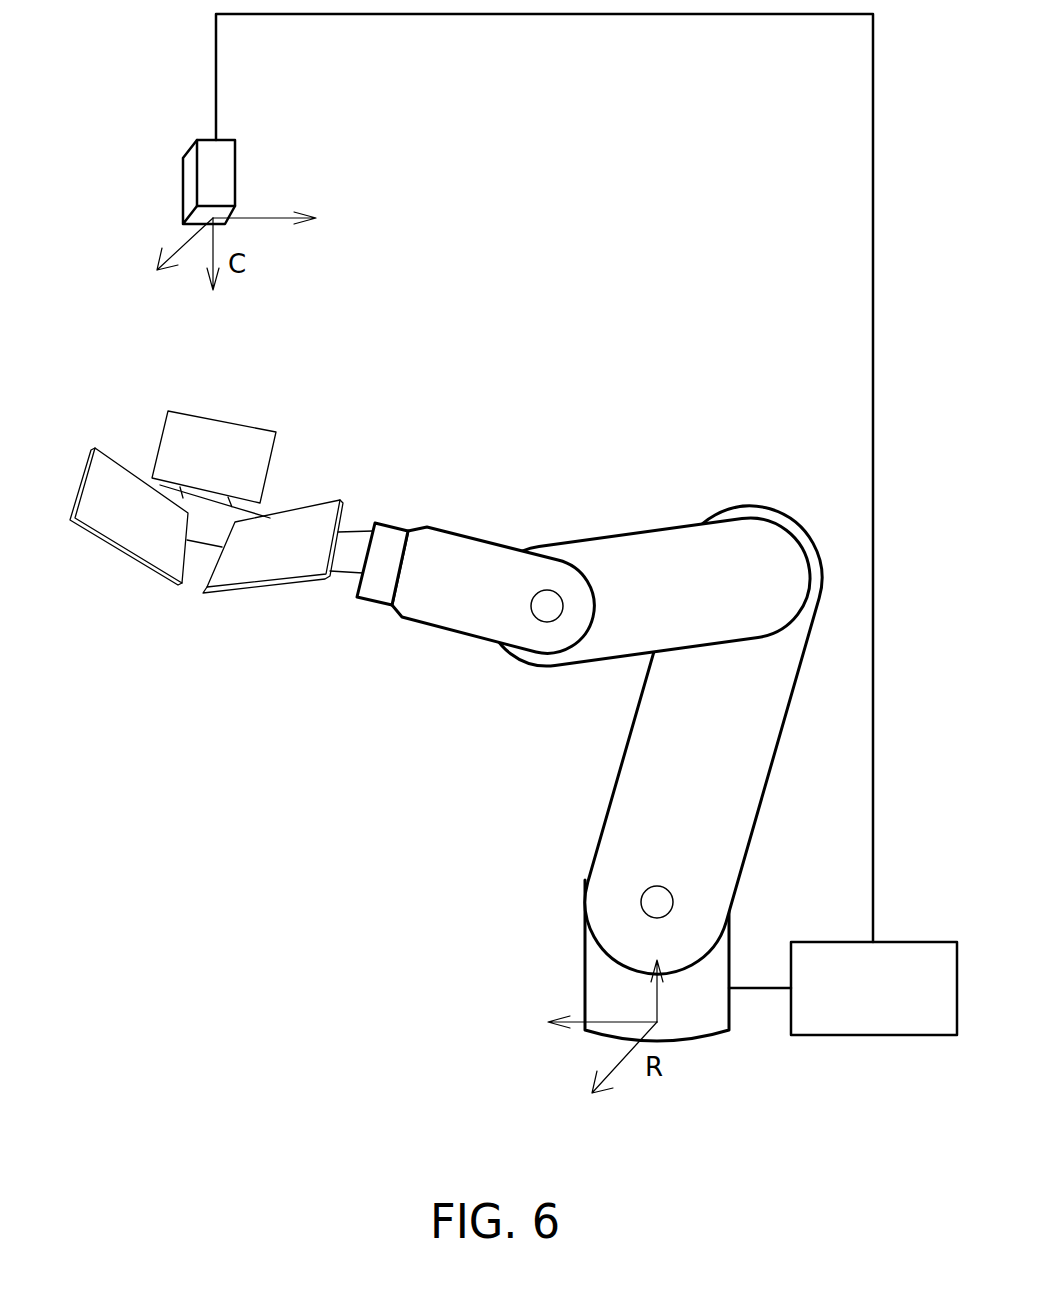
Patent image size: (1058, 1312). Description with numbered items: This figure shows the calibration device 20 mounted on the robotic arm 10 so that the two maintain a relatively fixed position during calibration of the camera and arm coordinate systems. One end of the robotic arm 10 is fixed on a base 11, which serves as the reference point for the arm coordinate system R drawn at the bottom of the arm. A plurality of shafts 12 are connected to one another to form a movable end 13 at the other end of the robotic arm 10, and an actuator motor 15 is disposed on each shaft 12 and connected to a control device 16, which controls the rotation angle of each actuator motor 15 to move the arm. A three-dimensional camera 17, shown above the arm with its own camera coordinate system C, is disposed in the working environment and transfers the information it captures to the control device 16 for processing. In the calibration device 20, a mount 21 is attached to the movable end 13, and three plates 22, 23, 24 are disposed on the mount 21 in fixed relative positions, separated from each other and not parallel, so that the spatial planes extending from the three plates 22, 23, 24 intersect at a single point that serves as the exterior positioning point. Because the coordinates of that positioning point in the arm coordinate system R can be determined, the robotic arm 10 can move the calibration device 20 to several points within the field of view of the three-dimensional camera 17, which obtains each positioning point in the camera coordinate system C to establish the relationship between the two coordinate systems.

The robotic arm 10 is at (586, 768).
The base 11 is at (585, 975).
The shaft 12 is at (615, 783).
The movable end 13 is at (377, 594).
The actuator motor 15 is at (553, 590).
The control device 16 is at (907, 942).
The 3D camera 17 is at (183, 184).
The calibration device 20 is at (232, 461).
The mount 21 is at (356, 528).
The plate 22 is at (307, 513).
The plate 23 is at (84, 477).
The plate 24 is at (220, 420).